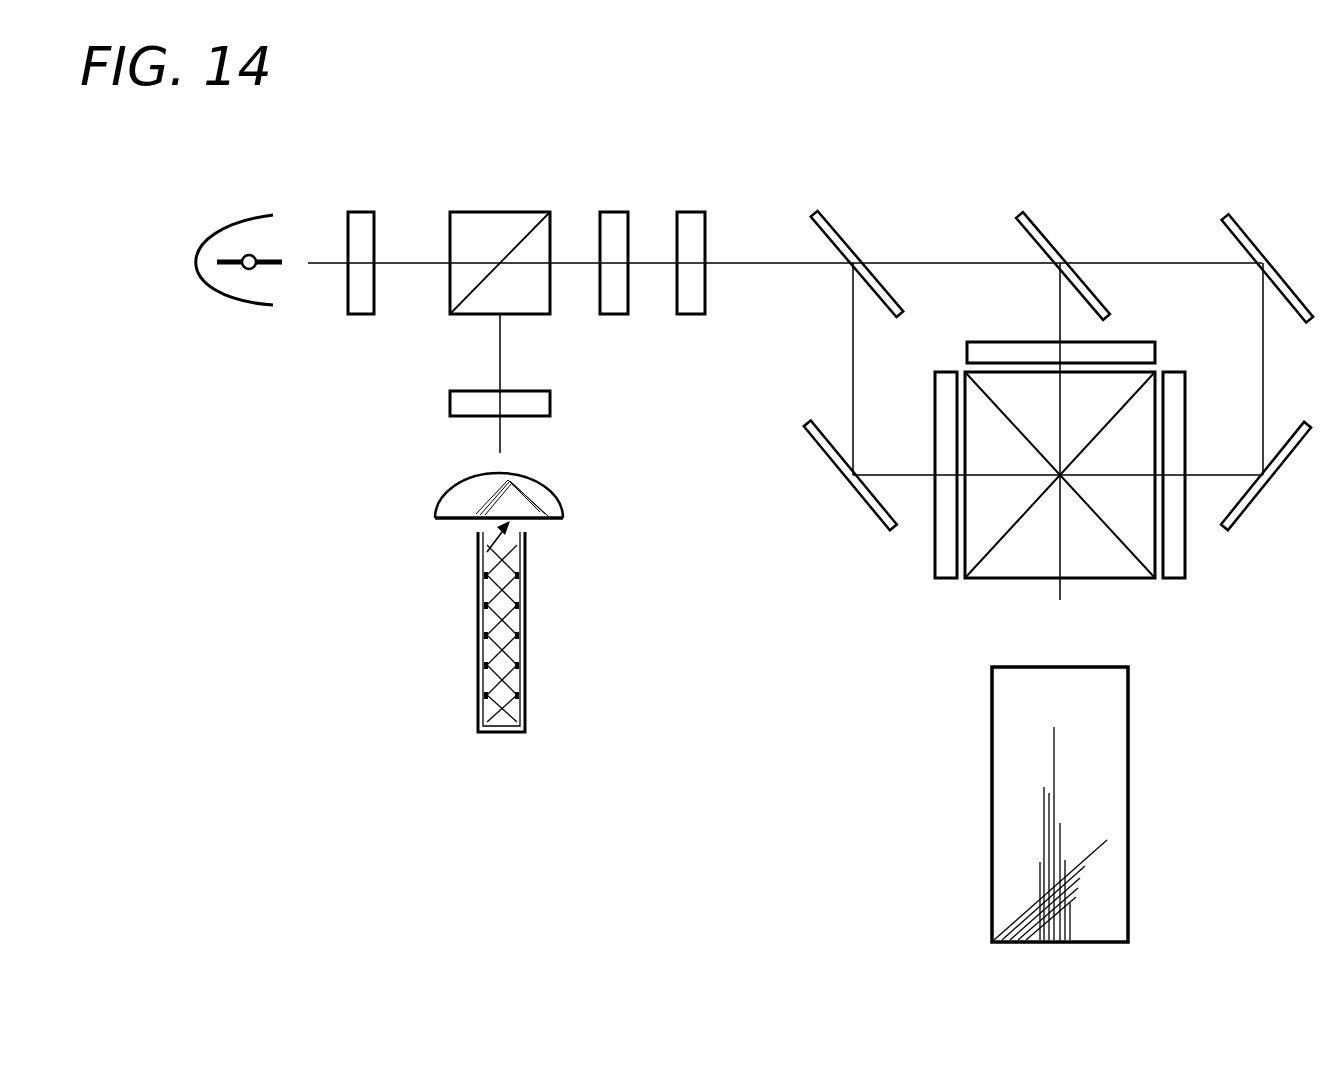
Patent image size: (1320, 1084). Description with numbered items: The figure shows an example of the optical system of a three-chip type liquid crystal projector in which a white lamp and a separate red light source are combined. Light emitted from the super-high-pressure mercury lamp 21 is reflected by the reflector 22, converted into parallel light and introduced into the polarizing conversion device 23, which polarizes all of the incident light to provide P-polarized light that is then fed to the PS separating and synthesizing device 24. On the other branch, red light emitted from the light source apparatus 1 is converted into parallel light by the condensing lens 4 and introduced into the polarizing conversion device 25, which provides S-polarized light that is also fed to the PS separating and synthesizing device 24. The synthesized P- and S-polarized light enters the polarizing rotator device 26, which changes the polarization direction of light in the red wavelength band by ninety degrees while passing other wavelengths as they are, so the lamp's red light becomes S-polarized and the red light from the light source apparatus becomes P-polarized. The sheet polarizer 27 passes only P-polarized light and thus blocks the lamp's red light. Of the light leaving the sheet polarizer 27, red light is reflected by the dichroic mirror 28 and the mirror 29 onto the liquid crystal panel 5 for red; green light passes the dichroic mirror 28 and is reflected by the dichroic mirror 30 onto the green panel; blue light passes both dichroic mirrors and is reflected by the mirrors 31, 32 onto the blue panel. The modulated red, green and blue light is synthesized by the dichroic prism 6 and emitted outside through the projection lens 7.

The light source apparatus 1 is at (527, 707).
The condensing lens 4 is at (538, 522).
The liquid crystal panel 5 is at (1155, 352).
The dichroic prism 6 is at (1110, 582).
The projection lens 7 is at (992, 800).
The super-high-pressure mercury lamp 21 is at (249, 270).
The reflector 22 is at (210, 230).
The polarizing conversion device 23 is at (363, 211).
The PS separating and synthesizing device 24 is at (500, 211).
The polarizing conversion device 25 is at (450, 398).
The polarizing rotator device 26 is at (618, 210).
The sheet polarizer 27 is at (690, 212).
The dichroic mirror 28 is at (853, 238).
The mirror 29 is at (847, 483).
The dichroic mirror 30 is at (1060, 250).
The mirror 31 is at (1287, 282).
The mirror 32 is at (1290, 458).